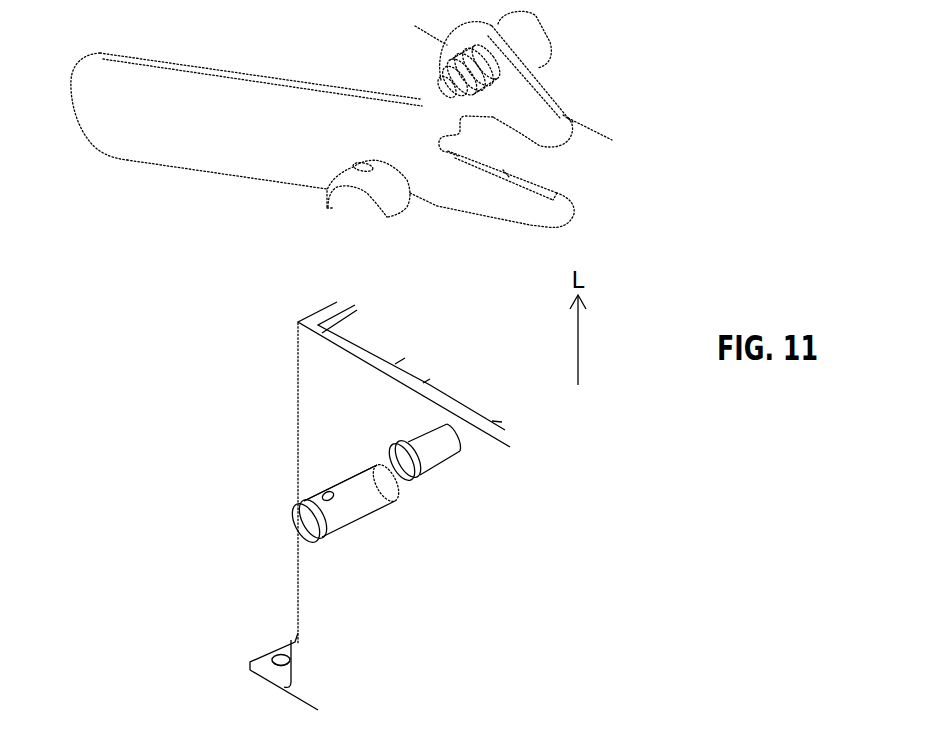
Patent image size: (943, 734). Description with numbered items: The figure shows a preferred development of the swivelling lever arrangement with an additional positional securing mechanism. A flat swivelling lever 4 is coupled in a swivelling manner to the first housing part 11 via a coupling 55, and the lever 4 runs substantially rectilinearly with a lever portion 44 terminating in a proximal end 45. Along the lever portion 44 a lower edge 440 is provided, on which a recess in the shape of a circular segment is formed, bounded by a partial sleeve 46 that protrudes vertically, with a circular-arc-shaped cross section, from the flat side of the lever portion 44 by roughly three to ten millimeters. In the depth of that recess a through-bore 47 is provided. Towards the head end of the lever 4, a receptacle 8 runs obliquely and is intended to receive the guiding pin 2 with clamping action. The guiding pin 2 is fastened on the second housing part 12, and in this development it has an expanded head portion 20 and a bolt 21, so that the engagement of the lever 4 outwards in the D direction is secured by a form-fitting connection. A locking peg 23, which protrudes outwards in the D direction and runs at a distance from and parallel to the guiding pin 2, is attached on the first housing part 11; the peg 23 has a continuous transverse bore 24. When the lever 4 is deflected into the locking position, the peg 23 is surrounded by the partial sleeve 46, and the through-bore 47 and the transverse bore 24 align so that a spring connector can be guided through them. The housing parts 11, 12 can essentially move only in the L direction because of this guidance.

The guiding pin 2 is at (416, 521).
The swivelling lever 4 is at (319, 134).
The receptacle 8 is at (527, 162).
The first housing part 11 is at (474, 102).
The second housing part 12 is at (352, 415).
The expanded head portion 20 is at (398, 539).
The bolt 21 is at (437, 442).
The locking peg 23 is at (360, 495).
The transverse bore 24 is at (326, 500).
The lever portion 44 is at (218, 108).
The proximal end 45 is at (108, 120).
The partial sleeve 46 is at (390, 195).
The through-bore 47 is at (357, 166).
The coupling 55 is at (447, 82).
The lower edge 440 is at (223, 172).